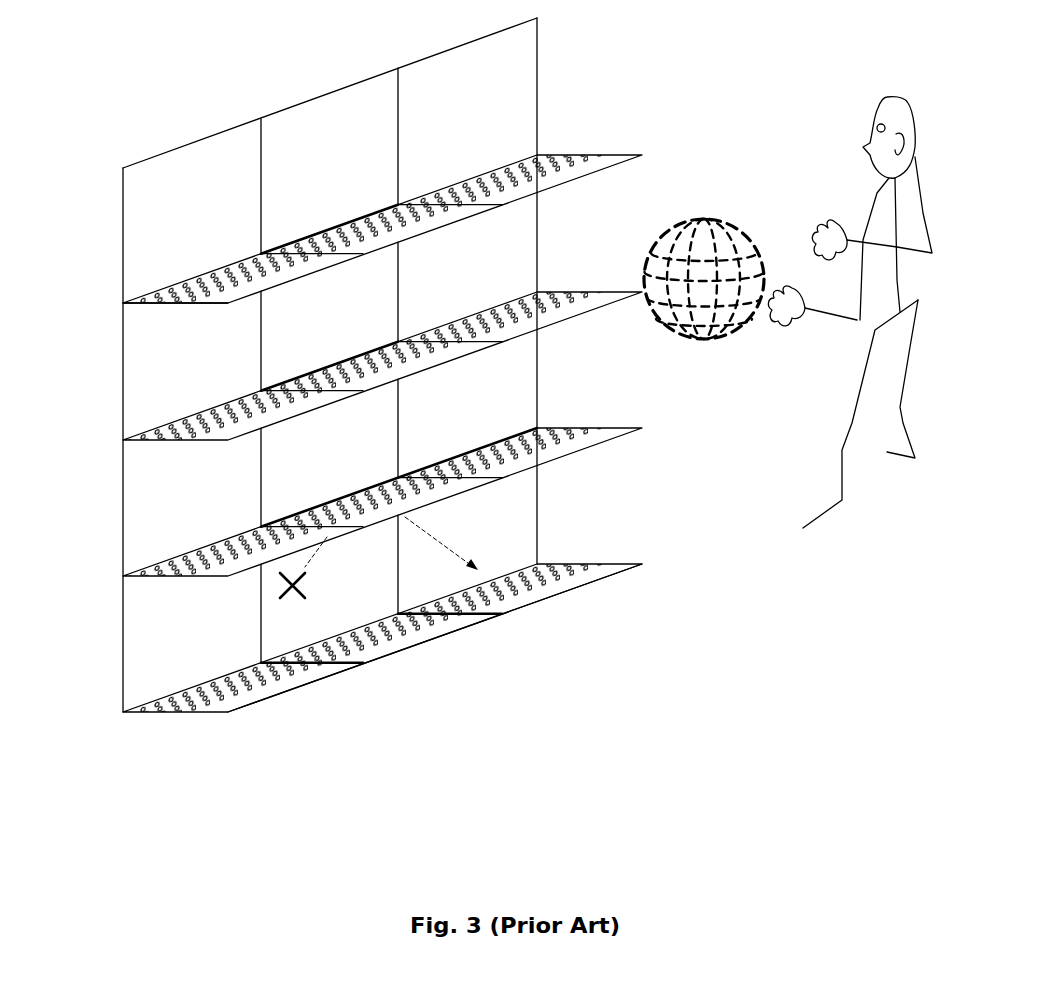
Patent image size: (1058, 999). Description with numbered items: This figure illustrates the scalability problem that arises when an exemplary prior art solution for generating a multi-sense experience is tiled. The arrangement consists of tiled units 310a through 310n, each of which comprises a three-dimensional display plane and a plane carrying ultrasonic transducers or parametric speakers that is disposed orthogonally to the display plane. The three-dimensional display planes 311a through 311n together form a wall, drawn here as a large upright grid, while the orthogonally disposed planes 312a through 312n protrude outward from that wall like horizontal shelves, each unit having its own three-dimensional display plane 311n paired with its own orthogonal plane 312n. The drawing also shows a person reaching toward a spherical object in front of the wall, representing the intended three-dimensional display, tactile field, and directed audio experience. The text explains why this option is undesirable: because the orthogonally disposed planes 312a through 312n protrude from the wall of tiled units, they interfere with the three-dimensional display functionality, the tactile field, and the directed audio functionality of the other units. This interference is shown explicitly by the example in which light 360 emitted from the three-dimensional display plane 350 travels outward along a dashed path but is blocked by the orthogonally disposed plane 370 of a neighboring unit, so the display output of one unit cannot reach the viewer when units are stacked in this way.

The tiled unit 310a is at (205, 276).
The 3-D display plane 311a is at (176, 193).
The orthogonally disposed plane 312a is at (165, 303).
The tiled unit 310n is at (510, 570).
The 3-D display plane 311n is at (503, 515).
The orthogonally disposed plane 312n is at (537, 597).
The 3-D display plane 350 is at (302, 615).
The light 360 is at (430, 533).
The orthogonally disposed plane 370 is at (343, 498).